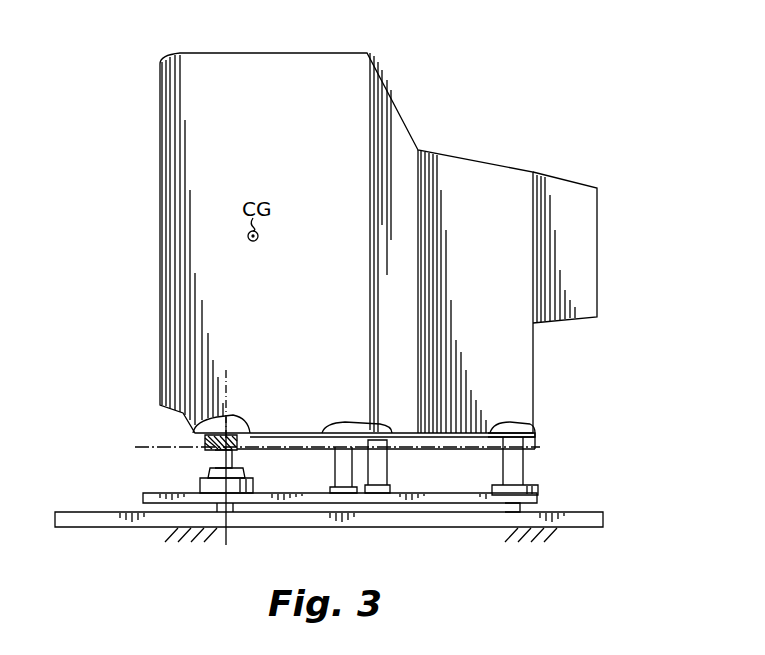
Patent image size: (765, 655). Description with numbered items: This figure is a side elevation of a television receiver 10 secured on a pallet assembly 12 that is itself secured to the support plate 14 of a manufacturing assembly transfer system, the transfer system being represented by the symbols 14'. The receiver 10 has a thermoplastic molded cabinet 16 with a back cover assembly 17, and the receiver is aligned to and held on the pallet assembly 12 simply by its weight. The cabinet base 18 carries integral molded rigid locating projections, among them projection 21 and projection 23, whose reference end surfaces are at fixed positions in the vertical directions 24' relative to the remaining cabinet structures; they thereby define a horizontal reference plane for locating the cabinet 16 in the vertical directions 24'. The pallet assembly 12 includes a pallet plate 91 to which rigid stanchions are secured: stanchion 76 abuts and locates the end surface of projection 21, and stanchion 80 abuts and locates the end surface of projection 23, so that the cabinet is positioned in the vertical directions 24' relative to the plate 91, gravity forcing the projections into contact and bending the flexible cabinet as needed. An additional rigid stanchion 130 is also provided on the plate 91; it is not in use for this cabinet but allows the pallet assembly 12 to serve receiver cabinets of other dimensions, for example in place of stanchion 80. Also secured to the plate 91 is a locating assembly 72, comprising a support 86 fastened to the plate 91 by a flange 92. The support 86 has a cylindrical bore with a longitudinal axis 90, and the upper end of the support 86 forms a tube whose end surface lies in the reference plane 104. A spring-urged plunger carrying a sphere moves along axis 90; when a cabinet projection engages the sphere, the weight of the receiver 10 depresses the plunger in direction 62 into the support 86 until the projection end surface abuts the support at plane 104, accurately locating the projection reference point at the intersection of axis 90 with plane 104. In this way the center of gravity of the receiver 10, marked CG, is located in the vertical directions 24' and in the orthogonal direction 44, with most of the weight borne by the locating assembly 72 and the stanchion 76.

The television receiver 10 is at (545, 146).
The pallet assembly 12 is at (86, 490).
The support plate 14 is at (329, 538).
The manufacturing assembly transfer system 14' is at (334, 545).
The cabinet 16 is at (282, 53).
The back cover assembly 17 is at (478, 165).
The cabinet base 18 is at (527, 428).
The locating projection 21 is at (356, 410).
The locating projection 23 is at (522, 443).
The vertical directions 24' is at (322, 303).
The orthogonal direction 44 is at (226, 392).
The plunger depression direction 62 is at (652, 494).
The locating assembly 72 is at (210, 465).
The stanchion 76 is at (337, 470).
The stanchion 80 is at (522, 477).
The support 86 is at (236, 461).
The longitudinal axis 90 is at (226, 540).
The pallet plate 91 is at (145, 500).
The flange 92 is at (197, 486).
The reference plane 104 is at (147, 447).
The additional rigid stanchion 130 is at (387, 472).